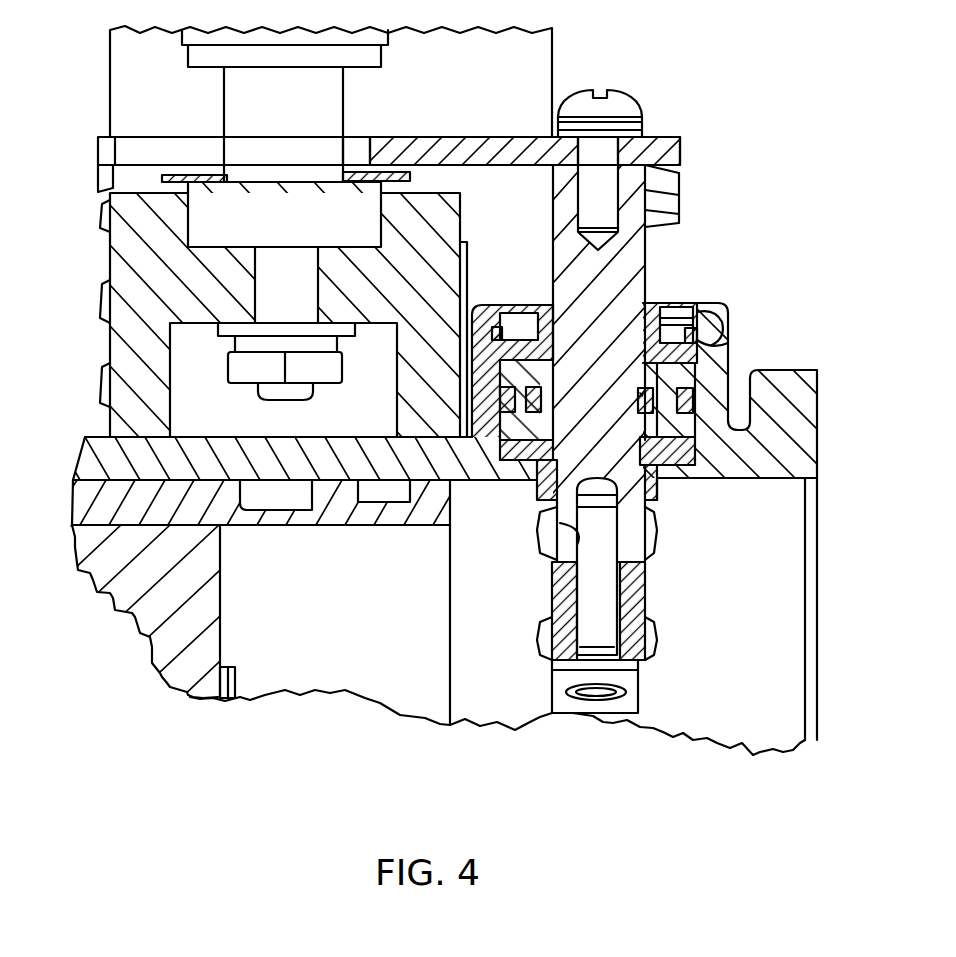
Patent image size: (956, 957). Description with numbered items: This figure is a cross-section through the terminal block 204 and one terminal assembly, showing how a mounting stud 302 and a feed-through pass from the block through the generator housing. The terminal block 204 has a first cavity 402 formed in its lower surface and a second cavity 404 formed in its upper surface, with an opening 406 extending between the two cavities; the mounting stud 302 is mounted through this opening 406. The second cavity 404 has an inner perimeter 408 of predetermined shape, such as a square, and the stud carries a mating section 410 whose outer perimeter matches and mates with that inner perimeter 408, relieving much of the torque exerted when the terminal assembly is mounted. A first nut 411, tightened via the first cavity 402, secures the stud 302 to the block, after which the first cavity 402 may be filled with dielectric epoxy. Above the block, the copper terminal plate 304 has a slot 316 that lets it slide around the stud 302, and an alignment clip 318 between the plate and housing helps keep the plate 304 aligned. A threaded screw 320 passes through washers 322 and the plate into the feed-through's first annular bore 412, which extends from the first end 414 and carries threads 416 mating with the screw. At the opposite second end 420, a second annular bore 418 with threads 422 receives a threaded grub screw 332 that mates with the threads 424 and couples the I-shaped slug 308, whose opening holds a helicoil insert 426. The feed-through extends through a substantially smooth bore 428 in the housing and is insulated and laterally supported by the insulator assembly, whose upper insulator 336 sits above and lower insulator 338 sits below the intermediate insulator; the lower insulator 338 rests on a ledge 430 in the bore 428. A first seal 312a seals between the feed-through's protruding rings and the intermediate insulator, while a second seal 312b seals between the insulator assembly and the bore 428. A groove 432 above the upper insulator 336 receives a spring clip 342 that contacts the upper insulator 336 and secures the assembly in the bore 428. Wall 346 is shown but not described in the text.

The terminal block 204 is at (110, 260).
The mounting stud 302 is at (308, 134).
The terminal plate 304 is at (680, 148).
The slug 308 is at (637, 593).
The first seal 312a is at (543, 395).
The second seal 312b is at (545, 372).
The slot 316 is at (353, 148).
The alignment clip 318 is at (420, 176).
The threaded screw 320 is at (615, 97).
The washers 322 is at (640, 128).
The threaded grub screw 332 is at (623, 630).
The upper insulator 336 is at (728, 343).
The lower insulator 338 is at (692, 450).
The spring clip 342 is at (500, 322).
The side wall 346 is at (750, 395).
The first cavity 402 is at (232, 420).
The second cavity 404 is at (388, 242).
The opening 406 is at (262, 262).
The inner perimeter 408 is at (195, 183).
The mating section 410 is at (345, 222).
The first nut 411 is at (325, 383).
The first annular bore 412 is at (680, 212).
The first end 414 is at (565, 147).
The threads 416 is at (580, 208).
The second annular bore 418 is at (607, 470).
The second end 420 is at (640, 555).
The threads 422 is at (556, 553).
The threads 424 is at (560, 523).
The helicoil insert 426 is at (567, 598).
The bore 428 is at (697, 302).
The ledge 430 is at (678, 468).
The groove 432 is at (703, 322).